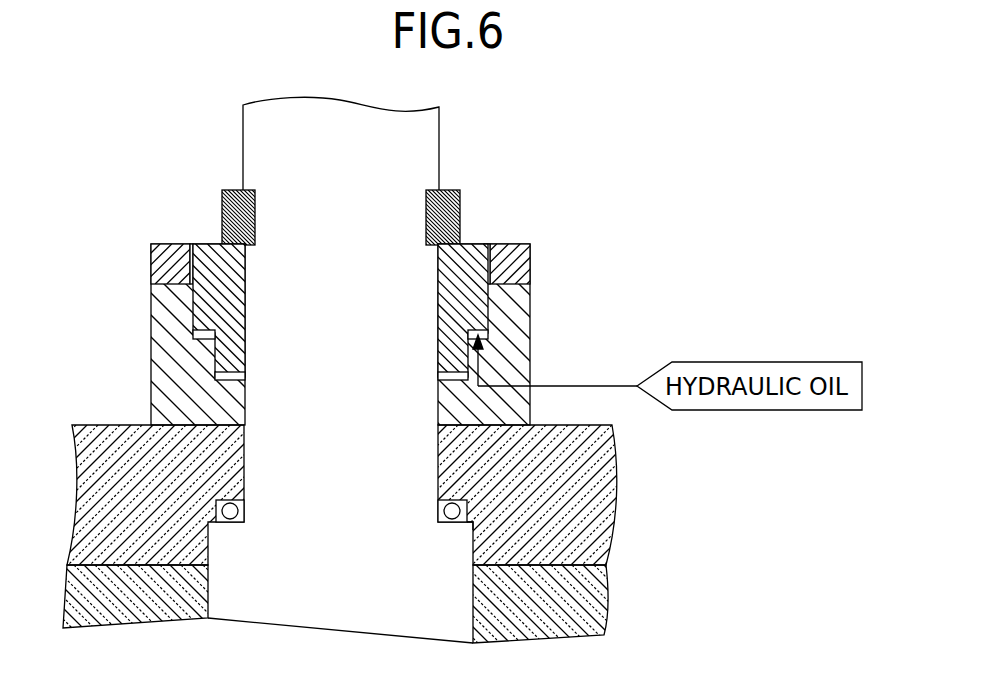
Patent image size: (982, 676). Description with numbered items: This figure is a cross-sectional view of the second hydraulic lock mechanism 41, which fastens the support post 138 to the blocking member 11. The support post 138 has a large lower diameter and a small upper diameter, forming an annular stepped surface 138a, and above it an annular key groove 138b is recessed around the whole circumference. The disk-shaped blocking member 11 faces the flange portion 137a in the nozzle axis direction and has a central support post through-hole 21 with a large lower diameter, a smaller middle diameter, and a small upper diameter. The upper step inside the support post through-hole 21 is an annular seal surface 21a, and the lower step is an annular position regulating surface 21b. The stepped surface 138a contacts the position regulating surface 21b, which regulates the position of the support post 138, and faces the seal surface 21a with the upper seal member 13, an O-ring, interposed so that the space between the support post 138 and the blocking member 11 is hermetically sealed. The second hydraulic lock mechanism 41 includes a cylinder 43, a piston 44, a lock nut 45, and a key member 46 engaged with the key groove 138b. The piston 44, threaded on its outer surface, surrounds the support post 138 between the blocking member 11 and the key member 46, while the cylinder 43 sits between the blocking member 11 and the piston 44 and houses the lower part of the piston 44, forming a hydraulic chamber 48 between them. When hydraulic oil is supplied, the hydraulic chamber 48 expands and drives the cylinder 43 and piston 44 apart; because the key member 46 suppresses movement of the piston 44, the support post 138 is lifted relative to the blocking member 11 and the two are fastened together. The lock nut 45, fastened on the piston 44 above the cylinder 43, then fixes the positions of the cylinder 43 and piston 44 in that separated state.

The support post 138 is at (439, 142).
The key member 46 is at (233, 190).
The key groove 138b is at (440, 214).
The lock nut 45 is at (151, 262).
The piston 44 is at (216, 244).
The hydraulic chamber 48 is at (197, 334).
The second hydraulic lock mechanism 41 is at (540, 228).
The cylinder 43 is at (530, 338).
The support post through-hole 21 is at (245, 452).
The upper seal member 13 is at (232, 522).
The blocking member 11 is at (612, 468).
The seal surface 21a is at (440, 508).
The stepped surface 138a is at (441, 514).
The position regulating surface 21b is at (470, 524).
The flange portion 137a is at (606, 596).